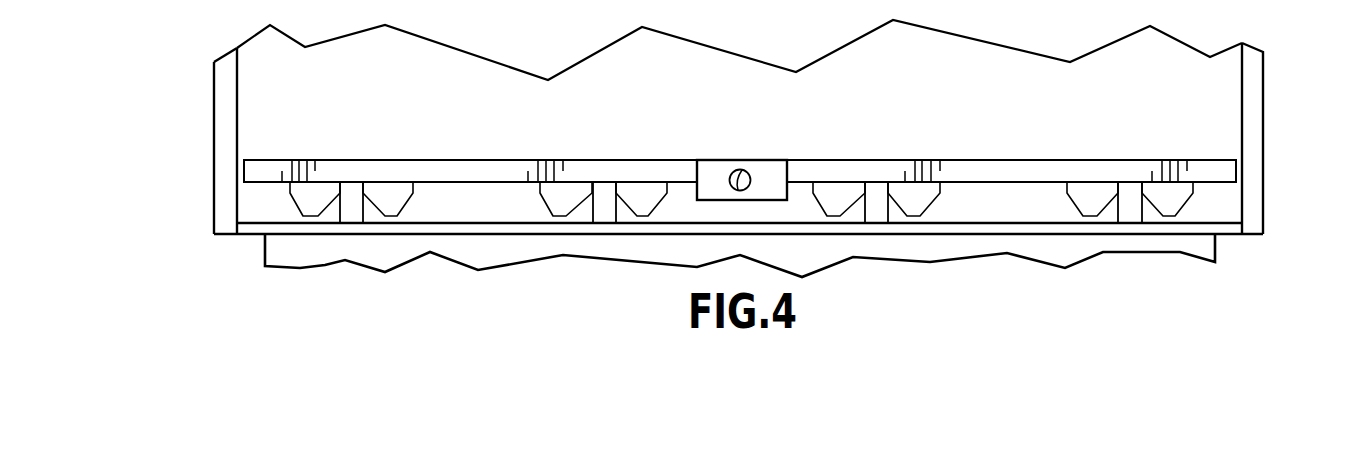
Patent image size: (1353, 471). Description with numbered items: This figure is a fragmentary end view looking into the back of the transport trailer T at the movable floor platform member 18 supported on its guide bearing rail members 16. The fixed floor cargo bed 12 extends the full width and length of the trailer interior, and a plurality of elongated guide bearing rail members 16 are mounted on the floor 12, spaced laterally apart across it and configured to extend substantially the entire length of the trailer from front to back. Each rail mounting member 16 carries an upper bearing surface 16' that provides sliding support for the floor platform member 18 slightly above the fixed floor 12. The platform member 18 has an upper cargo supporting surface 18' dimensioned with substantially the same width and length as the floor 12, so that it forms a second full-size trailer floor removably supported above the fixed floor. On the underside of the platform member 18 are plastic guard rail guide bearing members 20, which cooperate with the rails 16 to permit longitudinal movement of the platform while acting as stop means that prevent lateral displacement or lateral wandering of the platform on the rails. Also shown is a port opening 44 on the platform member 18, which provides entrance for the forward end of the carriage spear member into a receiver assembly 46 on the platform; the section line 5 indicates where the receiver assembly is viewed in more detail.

The floor cargo bed 12 is at (1220, 222).
The transport trailer T is at (1038, 62).
The floor platform member 18 is at (740, 143).
The upper cargo supporting surface 18' is at (734, 139).
The receiver assembly 46 is at (768, 168).
The port opening 44 is at (740, 170).
The guide bearing rail member 16 is at (743, 244).
The upper bearing surface 16' is at (741, 167).
The guard rail guide bearing member 20 is at (545, 200).
The section line 5- 5 is at (662, 130).